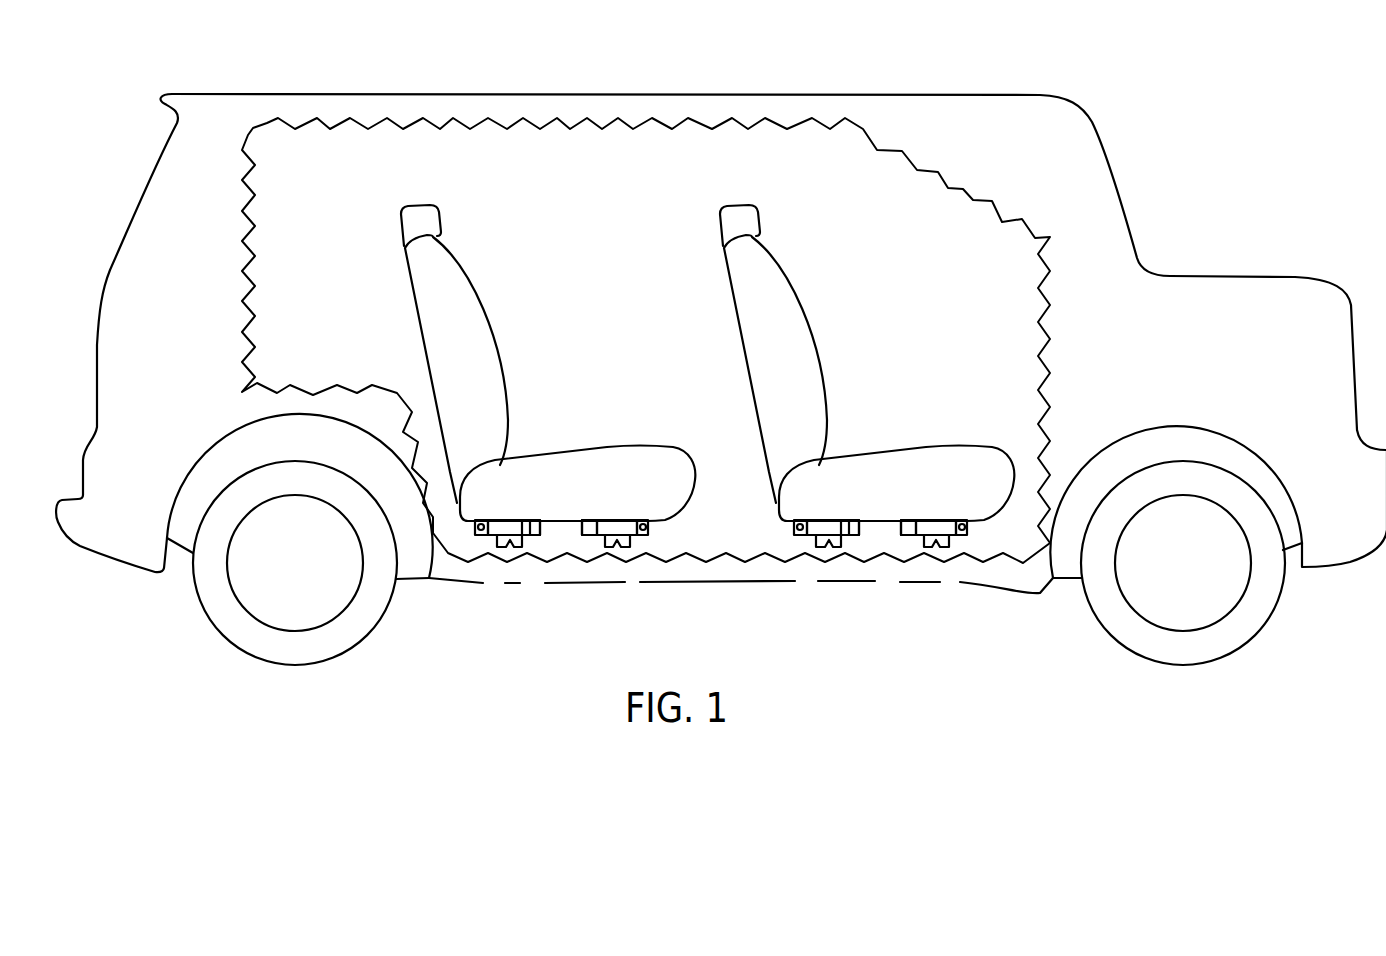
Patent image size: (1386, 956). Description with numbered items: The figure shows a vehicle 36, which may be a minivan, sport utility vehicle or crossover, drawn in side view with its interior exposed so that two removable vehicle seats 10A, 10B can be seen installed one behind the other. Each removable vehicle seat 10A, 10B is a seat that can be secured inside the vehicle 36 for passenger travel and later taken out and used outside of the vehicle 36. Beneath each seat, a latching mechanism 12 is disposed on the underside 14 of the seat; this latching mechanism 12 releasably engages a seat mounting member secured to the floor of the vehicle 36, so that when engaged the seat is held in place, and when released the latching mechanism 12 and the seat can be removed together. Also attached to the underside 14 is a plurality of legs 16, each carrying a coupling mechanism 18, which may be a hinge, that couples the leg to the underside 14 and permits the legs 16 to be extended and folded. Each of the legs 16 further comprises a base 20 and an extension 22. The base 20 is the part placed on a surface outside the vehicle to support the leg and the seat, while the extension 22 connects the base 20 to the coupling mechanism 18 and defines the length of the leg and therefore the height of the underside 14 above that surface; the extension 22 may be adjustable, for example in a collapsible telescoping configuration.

The vehicle 36 is at (1140, 93).
The removable vehicle seat 10A is at (914, 408).
The removable vehicle seat 10B is at (612, 408).
The latching mechanism 12 is at (502, 565).
The underside 14 is at (882, 548).
The legs 16 is at (530, 551).
The coupling mechanism 18 is at (482, 525).
The base 20 is at (540, 527).
The extension 22 is at (517, 527).